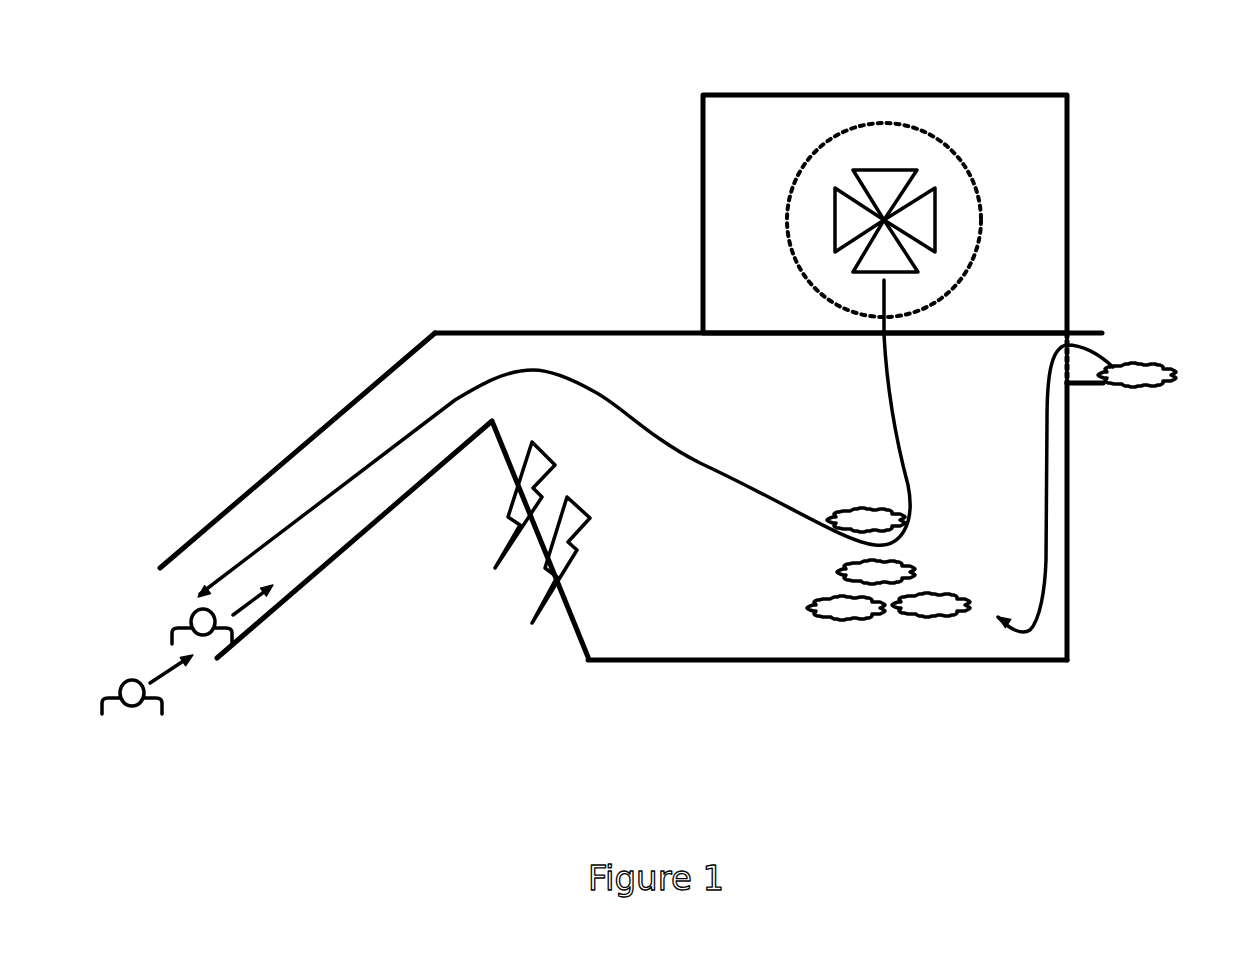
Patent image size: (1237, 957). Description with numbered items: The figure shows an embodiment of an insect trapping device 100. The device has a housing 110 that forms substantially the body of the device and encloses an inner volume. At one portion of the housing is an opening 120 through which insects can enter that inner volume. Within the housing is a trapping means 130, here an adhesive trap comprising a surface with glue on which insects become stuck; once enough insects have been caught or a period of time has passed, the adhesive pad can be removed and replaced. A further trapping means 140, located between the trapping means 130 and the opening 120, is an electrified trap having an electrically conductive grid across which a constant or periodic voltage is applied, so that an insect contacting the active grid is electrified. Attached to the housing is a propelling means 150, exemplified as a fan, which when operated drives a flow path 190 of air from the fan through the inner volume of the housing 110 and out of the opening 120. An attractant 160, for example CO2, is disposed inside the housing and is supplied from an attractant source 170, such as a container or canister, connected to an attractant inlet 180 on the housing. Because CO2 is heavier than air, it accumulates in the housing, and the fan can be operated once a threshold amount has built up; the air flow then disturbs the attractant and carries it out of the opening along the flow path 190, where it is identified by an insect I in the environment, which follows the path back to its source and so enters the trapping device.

The insect trapping device 100 is at (472, 183).
The housing 110 is at (607, 332).
The opening 120 is at (317, 428).
The trapping means 130 is at (820, 662).
The further trapping means 140 is at (510, 492).
The propelling means 150 is at (890, 157).
The attractant 160 is at (798, 605).
The attractant source 170 is at (1107, 342).
The attractant inlet 180 is at (1073, 363).
The flow path 190 is at (688, 462).
The insect I is at (142, 725).